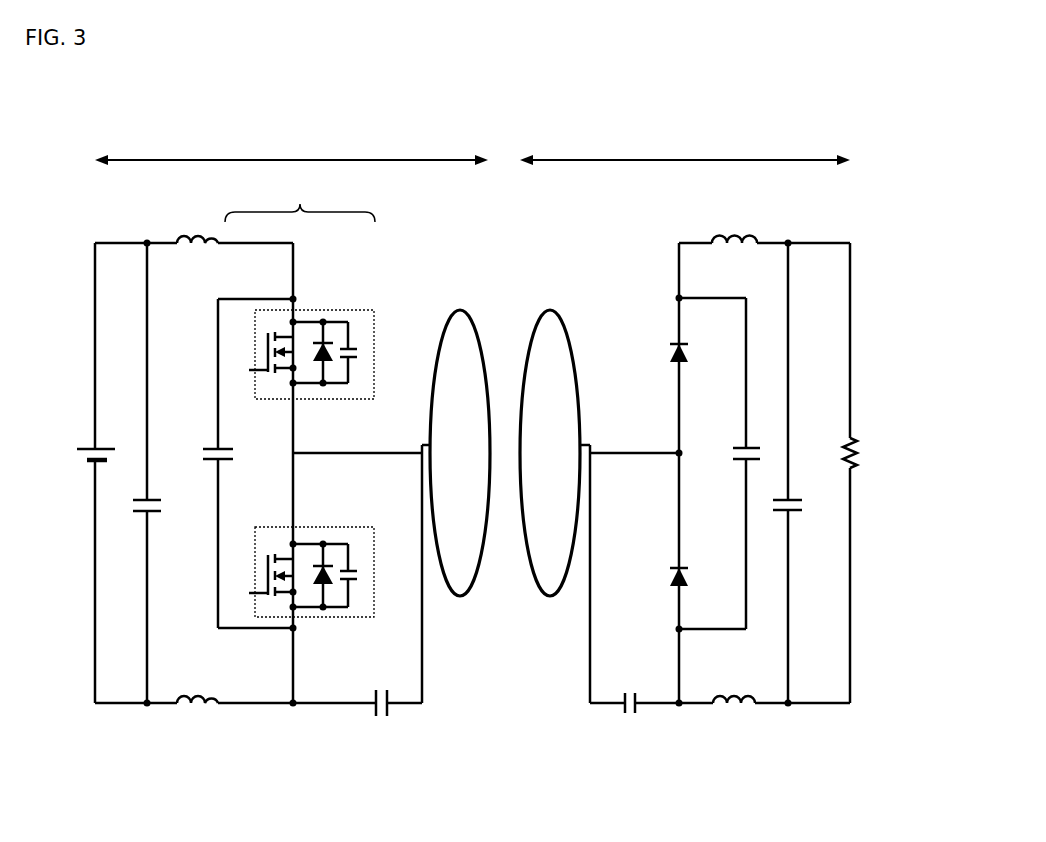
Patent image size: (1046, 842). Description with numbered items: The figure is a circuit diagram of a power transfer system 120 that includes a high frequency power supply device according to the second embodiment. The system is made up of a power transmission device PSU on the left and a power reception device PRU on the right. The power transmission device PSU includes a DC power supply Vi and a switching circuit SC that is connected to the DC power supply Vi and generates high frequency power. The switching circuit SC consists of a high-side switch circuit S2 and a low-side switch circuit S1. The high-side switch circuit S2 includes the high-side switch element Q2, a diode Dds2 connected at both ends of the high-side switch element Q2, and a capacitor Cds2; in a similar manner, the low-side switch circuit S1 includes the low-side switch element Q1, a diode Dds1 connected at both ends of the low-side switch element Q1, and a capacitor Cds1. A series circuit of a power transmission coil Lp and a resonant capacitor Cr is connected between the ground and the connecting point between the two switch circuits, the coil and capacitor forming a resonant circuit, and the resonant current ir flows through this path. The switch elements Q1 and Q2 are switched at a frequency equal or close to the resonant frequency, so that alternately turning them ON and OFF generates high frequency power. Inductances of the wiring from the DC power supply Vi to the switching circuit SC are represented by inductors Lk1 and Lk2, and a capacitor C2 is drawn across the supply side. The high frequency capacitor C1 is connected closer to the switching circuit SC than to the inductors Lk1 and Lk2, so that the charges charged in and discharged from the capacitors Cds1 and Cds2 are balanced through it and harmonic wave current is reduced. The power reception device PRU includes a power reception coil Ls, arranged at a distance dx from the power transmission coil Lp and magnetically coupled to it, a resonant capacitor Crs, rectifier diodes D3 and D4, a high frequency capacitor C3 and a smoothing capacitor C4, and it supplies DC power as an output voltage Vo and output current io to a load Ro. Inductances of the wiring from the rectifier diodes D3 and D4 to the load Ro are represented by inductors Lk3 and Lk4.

The power transfer system 120 is at (847, 82).
The power transmission device PSU is at (291, 149).
The power reception device PRU is at (685, 149).
The switching circuit SC is at (300, 198).
The DC power supply Vi is at (81, 455).
The high frequency capacitor C1 is at (234, 458).
The capacitor C2 is at (164, 508).
The high frequency capacitor C3 is at (727, 458).
The low frequency capacitor C4 is at (804, 508).
The inductor Lk1 is at (196, 717).
The inductor Lk2 is at (197, 226).
The inductor Lk3 is at (733, 717).
The inductor Lk4 is at (734, 226).
The resonant capacitor Cr is at (382, 720).
The resonant capacitor Crs is at (629, 721).
The resonance current ir is at (316, 718).
The low-side switch element Q1 is at (262, 575).
The high-side switch element Q2 is at (262, 352).
The diode Dds1 is at (310, 582).
The diode Dds2 is at (312, 342).
The capacitor Cds1 is at (357, 571).
The capacitor Cds2 is at (356, 356).
The low-side switch circuit S1 is at (374, 617).
The high-side switch circuit S2 is at (374, 310).
The power transmission coil Lp is at (460, 435).
The power reception coil Ls is at (550, 435).
The distance dx is at (542, 453).
The rectifier diode D3 is at (659, 578).
The rectifier diode D4 is at (659, 353).
The load Ro is at (837, 440).
The output voltage Vo is at (883, 449).
The output current io is at (842, 231).